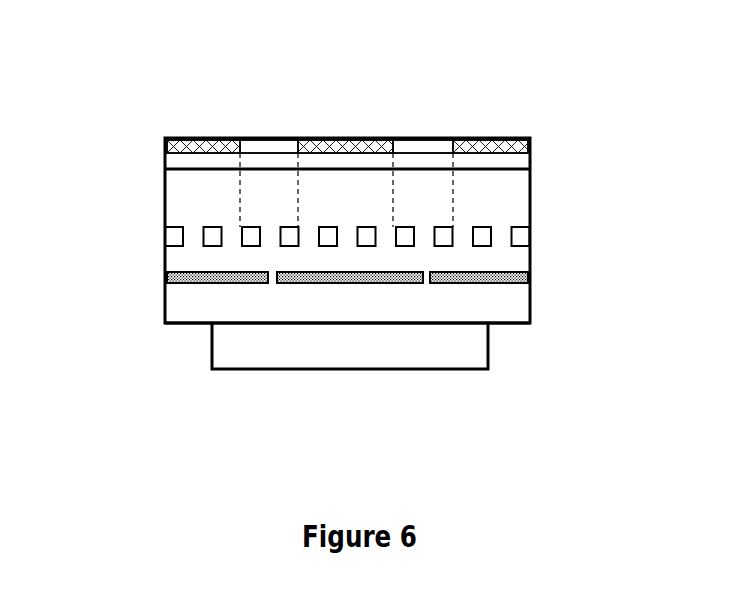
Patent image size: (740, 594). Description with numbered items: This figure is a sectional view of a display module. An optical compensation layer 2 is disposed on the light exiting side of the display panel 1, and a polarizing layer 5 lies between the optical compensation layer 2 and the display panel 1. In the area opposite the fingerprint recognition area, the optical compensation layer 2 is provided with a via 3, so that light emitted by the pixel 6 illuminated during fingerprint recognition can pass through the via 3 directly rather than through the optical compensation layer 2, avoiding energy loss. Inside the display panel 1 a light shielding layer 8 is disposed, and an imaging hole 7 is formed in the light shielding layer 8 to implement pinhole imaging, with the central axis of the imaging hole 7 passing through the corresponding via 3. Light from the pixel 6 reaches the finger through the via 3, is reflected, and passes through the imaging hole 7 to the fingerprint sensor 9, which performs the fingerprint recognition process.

The display panel 1 is at (180, 198).
The optical compensation layer 2 is at (523, 143).
The via 3 is at (420, 147).
The polarizing layer 5 is at (180, 163).
The pixel 6 is at (443, 222).
The imaging hole 7 is at (427, 290).
The light shielding layer 8 is at (530, 275).
The fingerprint sensor 9 is at (350, 345).